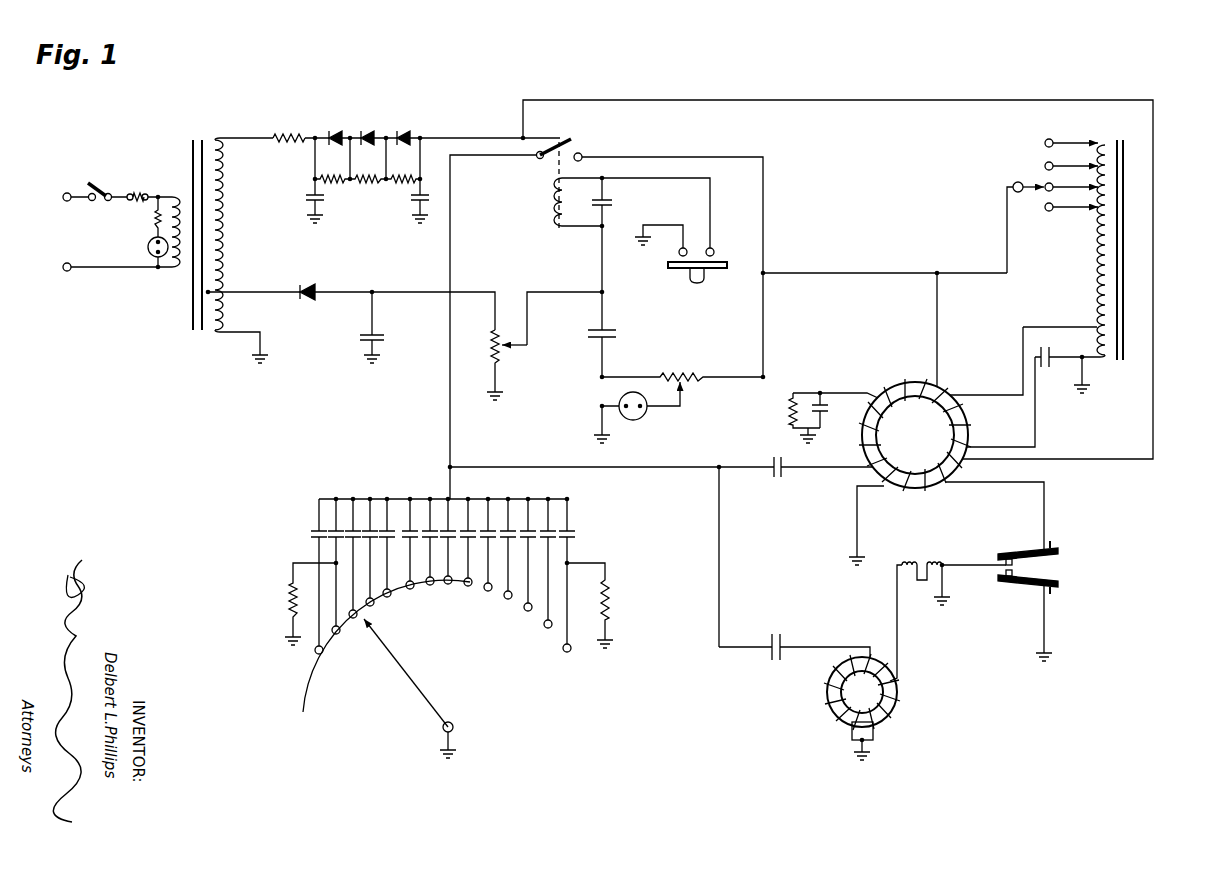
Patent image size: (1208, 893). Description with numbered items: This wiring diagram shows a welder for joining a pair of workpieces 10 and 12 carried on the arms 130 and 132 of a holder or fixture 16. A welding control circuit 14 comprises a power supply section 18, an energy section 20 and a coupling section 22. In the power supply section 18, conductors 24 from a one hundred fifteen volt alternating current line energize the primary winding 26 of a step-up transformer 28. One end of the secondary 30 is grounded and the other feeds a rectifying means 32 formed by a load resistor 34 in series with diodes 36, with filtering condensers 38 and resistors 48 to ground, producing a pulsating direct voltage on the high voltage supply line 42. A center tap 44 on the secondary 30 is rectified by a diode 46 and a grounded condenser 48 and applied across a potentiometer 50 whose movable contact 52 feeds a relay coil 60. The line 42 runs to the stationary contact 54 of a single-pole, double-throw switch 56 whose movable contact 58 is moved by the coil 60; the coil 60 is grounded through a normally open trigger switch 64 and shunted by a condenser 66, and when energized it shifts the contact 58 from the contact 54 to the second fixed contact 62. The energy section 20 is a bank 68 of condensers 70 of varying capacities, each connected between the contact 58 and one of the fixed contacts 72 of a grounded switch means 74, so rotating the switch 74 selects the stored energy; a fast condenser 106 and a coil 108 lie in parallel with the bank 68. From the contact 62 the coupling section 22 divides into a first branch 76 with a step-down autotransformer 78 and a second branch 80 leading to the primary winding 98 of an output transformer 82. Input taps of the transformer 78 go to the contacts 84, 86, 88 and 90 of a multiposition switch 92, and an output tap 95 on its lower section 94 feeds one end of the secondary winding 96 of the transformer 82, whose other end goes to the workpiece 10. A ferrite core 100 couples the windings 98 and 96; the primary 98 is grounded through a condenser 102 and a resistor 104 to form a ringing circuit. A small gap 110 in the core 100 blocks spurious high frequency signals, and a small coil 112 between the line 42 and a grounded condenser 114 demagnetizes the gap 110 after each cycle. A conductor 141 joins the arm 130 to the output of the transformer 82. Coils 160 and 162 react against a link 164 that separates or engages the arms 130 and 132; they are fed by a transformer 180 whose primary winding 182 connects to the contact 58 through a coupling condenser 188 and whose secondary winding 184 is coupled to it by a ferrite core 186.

The workpiece 10 is at (1051, 542).
The workpiece 12 is at (1051, 588).
The welding control circuit 14 is at (106, 255).
The workpiece holder or fixture 16 is at (1012, 548).
The power supply section 18 is at (318, 322).
The energy section 20 is at (443, 616).
The coupling section 22 is at (832, 222).
The electrical conductors 24 is at (130, 200).
The primary winding 26 is at (180, 195).
The step-up transformer 28 is at (198, 138).
The secondary winding 30 is at (224, 222).
The rectifying means 32 is at (301, 152).
The load resistor 34 is at (292, 136).
The diodes 36 is at (334, 131).
The filtering condensers 38 is at (310, 200).
The high voltage supply line 42 is at (494, 138).
The center tap 44 is at (234, 292).
The diode 46 is at (314, 290).
The grounded condenser 48 is at (332, 183).
The potentiometer 50 is at (493, 338).
The movable contact 52 is at (518, 350).
The stationary contact 54 is at (565, 140).
The single-pole double-throw switch 56 is at (580, 148).
The movable contact 58 is at (537, 158).
The relay coil 60 is at (555, 205).
The second fixed contact 62 is at (583, 160).
The trigger switch 64 is at (681, 269).
The condenser 66 is at (612, 336).
The bank of condensers 68 is at (298, 547).
The condensers 70 is at (321, 530).
The fixed contacts 72 is at (334, 640).
The switch means 74 is at (407, 674).
The first branch 76 is at (1074, 263).
The step-down autotransformer 78 is at (1130, 220).
The second branch 80 is at (950, 322).
The output transformer 82 is at (955, 392).
The switch contact 84 is at (1048, 140).
The switch contact 86 is at (1048, 162).
The switch contact 88 is at (1052, 184).
The switch contact 90 is at (1048, 211).
The multiposition switch 92 is at (1015, 183).
The lower section 94 is at (1097, 345).
The output tap 95 is at (1098, 328).
The secondary winding 96 is at (891, 396).
The primary winding 98 is at (915, 381).
The core 100 is at (968, 441).
The condenser 102 is at (826, 429).
The resistor 104 is at (790, 418).
The condenser 106 is at (785, 478).
The coil 108 is at (894, 450).
The gap 110 is at (968, 416).
The coil 112 is at (948, 450).
The condenser 114 is at (1052, 368).
The arm 130 is at (1038, 552).
The arm 132 is at (1036, 586).
The conductor 141 is at (1046, 515).
The coil 160 is at (907, 564).
The coil 162 is at (938, 564).
The link 164 is at (985, 555).
The transformer 180 is at (899, 698).
The primary winding 182 is at (828, 698).
The secondary winding 184 is at (898, 690).
The core 186 is at (856, 716).
The coupling condenser 188 is at (770, 660).